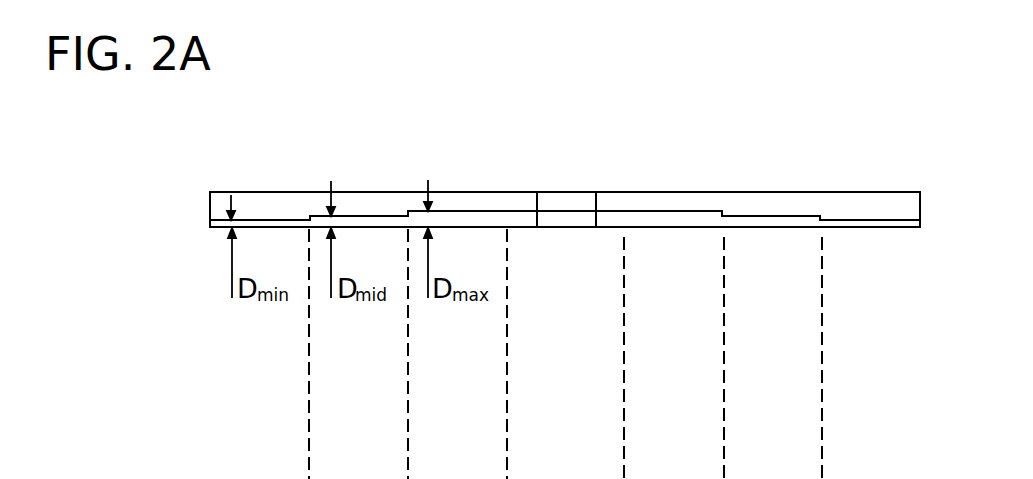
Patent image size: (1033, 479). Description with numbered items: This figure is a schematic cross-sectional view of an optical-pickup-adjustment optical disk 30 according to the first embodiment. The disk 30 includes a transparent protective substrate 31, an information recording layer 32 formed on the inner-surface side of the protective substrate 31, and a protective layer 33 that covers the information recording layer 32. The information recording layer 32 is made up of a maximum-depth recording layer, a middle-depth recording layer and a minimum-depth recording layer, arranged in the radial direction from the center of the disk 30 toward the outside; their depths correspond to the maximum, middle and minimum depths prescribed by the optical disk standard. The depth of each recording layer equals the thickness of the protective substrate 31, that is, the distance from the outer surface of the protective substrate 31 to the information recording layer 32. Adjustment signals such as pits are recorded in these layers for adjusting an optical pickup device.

The optical-pickup-adjustment optical disk 30 is at (628, 152).
The transparent protective substrate 31 is at (663, 222).
The information recording layer 32 is at (513, 210).
The protective layer 33 is at (493, 200).